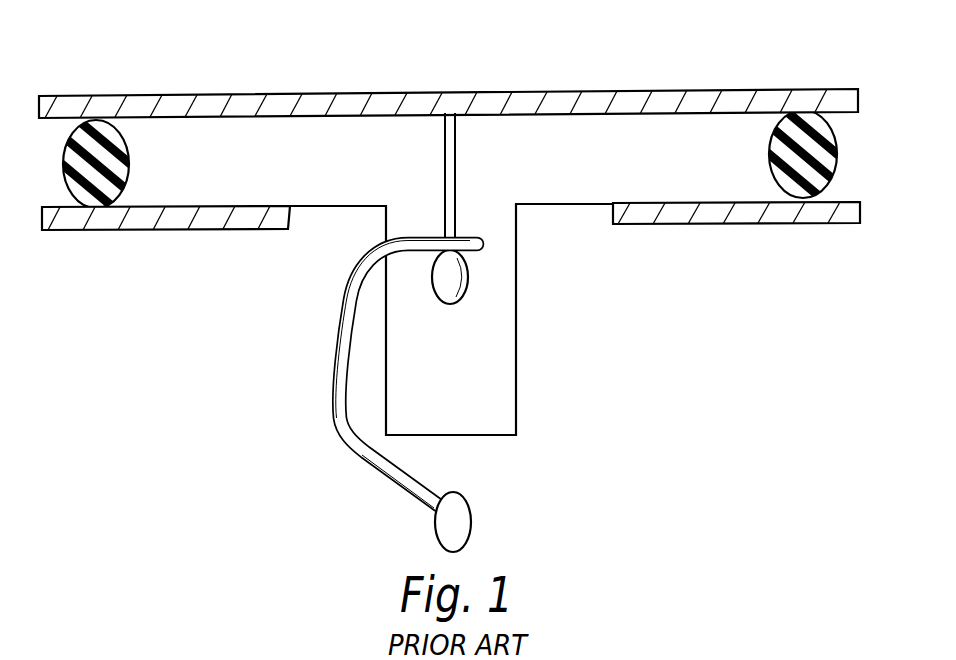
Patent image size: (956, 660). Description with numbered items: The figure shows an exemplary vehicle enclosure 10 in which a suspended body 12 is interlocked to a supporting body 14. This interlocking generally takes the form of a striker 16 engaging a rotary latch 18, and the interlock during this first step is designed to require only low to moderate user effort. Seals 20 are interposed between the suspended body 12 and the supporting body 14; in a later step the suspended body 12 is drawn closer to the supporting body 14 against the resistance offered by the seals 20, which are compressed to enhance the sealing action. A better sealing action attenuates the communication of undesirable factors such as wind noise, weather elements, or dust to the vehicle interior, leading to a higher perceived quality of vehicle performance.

The vehicle enclosure 10 is at (546, 64).
The suspended body 12 is at (181, 95).
The supporting body 14 is at (184, 230).
The striker 16 is at (443, 173).
The rotary latch 18 is at (462, 527).
The seals 20 is at (782, 181).